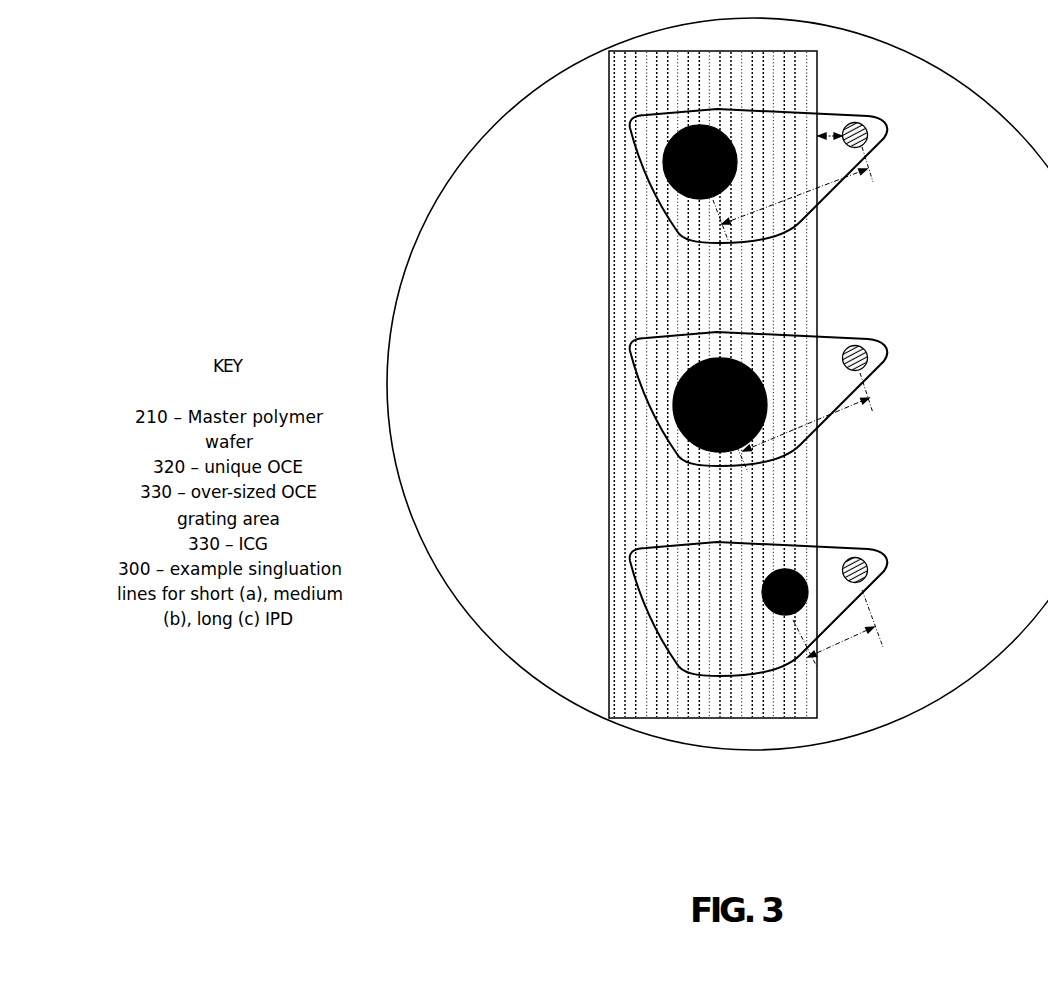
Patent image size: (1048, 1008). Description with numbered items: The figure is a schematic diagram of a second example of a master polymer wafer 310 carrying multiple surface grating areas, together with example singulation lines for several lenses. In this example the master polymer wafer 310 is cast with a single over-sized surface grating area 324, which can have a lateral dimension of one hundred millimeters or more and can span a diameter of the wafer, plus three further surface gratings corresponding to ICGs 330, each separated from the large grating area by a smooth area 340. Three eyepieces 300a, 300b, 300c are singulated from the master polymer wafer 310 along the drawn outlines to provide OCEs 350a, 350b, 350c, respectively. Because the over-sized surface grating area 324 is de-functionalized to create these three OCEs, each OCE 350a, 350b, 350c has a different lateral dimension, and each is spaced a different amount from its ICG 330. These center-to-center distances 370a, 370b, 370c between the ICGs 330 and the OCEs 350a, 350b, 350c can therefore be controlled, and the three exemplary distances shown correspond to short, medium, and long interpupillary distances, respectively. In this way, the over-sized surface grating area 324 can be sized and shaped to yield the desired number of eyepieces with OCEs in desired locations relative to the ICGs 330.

The master polymer wafer 310 is at (498, 122).
The over-sized surface grating area 324 is at (669, 50).
The eyepiece 300a is at (633, 145).
The eyepiece 300b is at (634, 372).
The eyepiece 300c is at (628, 578).
The OCE 350a is at (712, 198).
The OCE 350b is at (688, 435).
The OCE 350c is at (778, 612).
The ICG 330 is at (876, 120).
The smooth area 340 is at (828, 132).
The center-to-center distance 370a is at (801, 216).
The center-to-center distance 370b is at (838, 414).
The center-to-center distance 370c is at (842, 640).